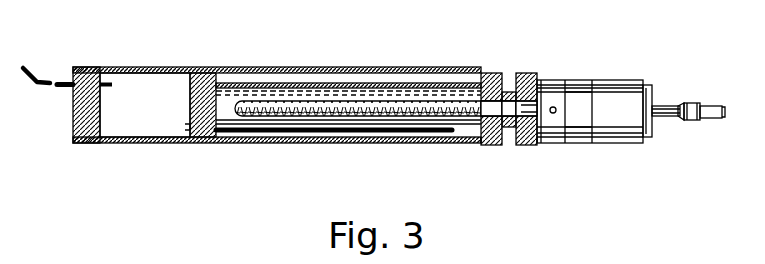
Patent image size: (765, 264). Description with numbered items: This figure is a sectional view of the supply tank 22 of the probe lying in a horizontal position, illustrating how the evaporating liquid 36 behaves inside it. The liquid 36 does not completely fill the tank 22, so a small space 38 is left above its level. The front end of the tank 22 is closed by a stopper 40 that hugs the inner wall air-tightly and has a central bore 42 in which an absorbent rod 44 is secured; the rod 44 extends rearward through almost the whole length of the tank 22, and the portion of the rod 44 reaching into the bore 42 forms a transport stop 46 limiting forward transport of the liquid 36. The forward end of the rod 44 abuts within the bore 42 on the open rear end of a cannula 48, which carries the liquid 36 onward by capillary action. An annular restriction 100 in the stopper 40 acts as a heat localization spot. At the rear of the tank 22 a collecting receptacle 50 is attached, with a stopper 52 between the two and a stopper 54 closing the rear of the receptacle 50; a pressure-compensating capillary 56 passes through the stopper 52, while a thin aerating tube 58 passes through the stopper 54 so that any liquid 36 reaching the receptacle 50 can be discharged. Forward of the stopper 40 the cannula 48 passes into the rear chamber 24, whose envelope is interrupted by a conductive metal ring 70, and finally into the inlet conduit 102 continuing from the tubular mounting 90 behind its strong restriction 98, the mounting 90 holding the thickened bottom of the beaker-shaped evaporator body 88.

The supply tank 22 is at (333, 70).
The rear chamber 24 is at (605, 83).
The liquid 36 is at (250, 92).
The space 38 is at (390, 82).
The stopper 40 is at (523, 75).
The bore 42 is at (487, 75).
The absorbent rod 44 is at (357, 113).
The transport stop 46 is at (478, 143).
The cannula 48 is at (538, 140).
The collecting receptacle 50 is at (145, 83).
The stopper 52 is at (202, 72).
The stopper 54 is at (88, 78).
The pressure-compensating capillary 56 is at (245, 131).
The aerating tube 58 is at (36, 71).
The ring 70 is at (578, 122).
The evaporator body 88 is at (710, 117).
The tubular mounting 90 is at (688, 103).
The restriction 98 is at (680, 118).
The annular restriction 100 is at (512, 137).
The inlet conduit 102 is at (667, 107).